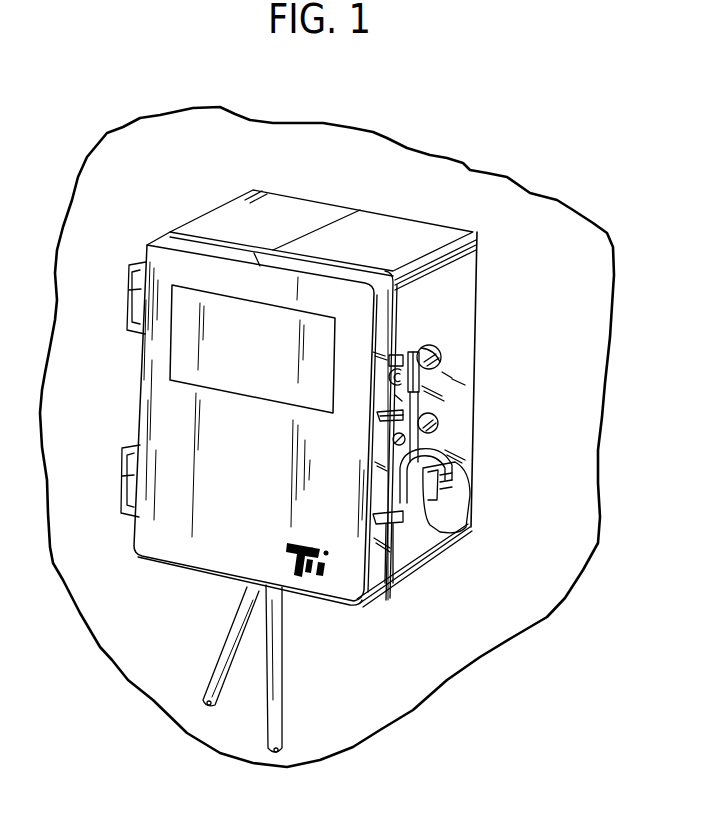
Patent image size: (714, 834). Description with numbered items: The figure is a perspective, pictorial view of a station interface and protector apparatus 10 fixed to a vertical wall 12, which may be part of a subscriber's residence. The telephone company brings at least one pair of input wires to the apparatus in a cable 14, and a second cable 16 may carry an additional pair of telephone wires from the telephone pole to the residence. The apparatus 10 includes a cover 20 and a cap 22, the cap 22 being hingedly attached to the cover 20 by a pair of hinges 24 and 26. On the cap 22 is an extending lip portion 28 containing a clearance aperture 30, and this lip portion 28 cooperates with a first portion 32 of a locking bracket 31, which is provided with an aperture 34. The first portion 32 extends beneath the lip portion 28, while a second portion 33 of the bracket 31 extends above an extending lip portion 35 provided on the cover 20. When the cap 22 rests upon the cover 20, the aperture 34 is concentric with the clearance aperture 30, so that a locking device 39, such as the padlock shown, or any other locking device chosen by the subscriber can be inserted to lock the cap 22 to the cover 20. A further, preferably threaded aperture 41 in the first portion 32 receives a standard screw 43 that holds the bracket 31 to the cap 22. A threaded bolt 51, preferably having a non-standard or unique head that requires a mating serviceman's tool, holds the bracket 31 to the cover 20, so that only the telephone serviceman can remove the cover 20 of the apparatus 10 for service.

The station interface and protector apparatus 10 is at (168, 196).
The vertical wall 12 is at (598, 302).
The cable 14 is at (284, 717).
The second cable 16 is at (220, 648).
The cover 20 is at (243, 215).
The cap 22 is at (158, 263).
The hinge 24 is at (131, 303).
The hinge 26 is at (127, 497).
The extending lip portion 28 is at (401, 505).
The clearance aperture 30 is at (430, 455).
The locking bracket 31 is at (419, 403).
The first portion 32 is at (406, 438).
The second portion 33 is at (414, 363).
The aperture 34 is at (491, 487).
The extending lip portion 35 is at (405, 414).
The locking device 39 is at (445, 517).
The threaded aperture 41 is at (441, 364).
The screw 43 is at (440, 420).
The threaded bolt 51 is at (400, 336).